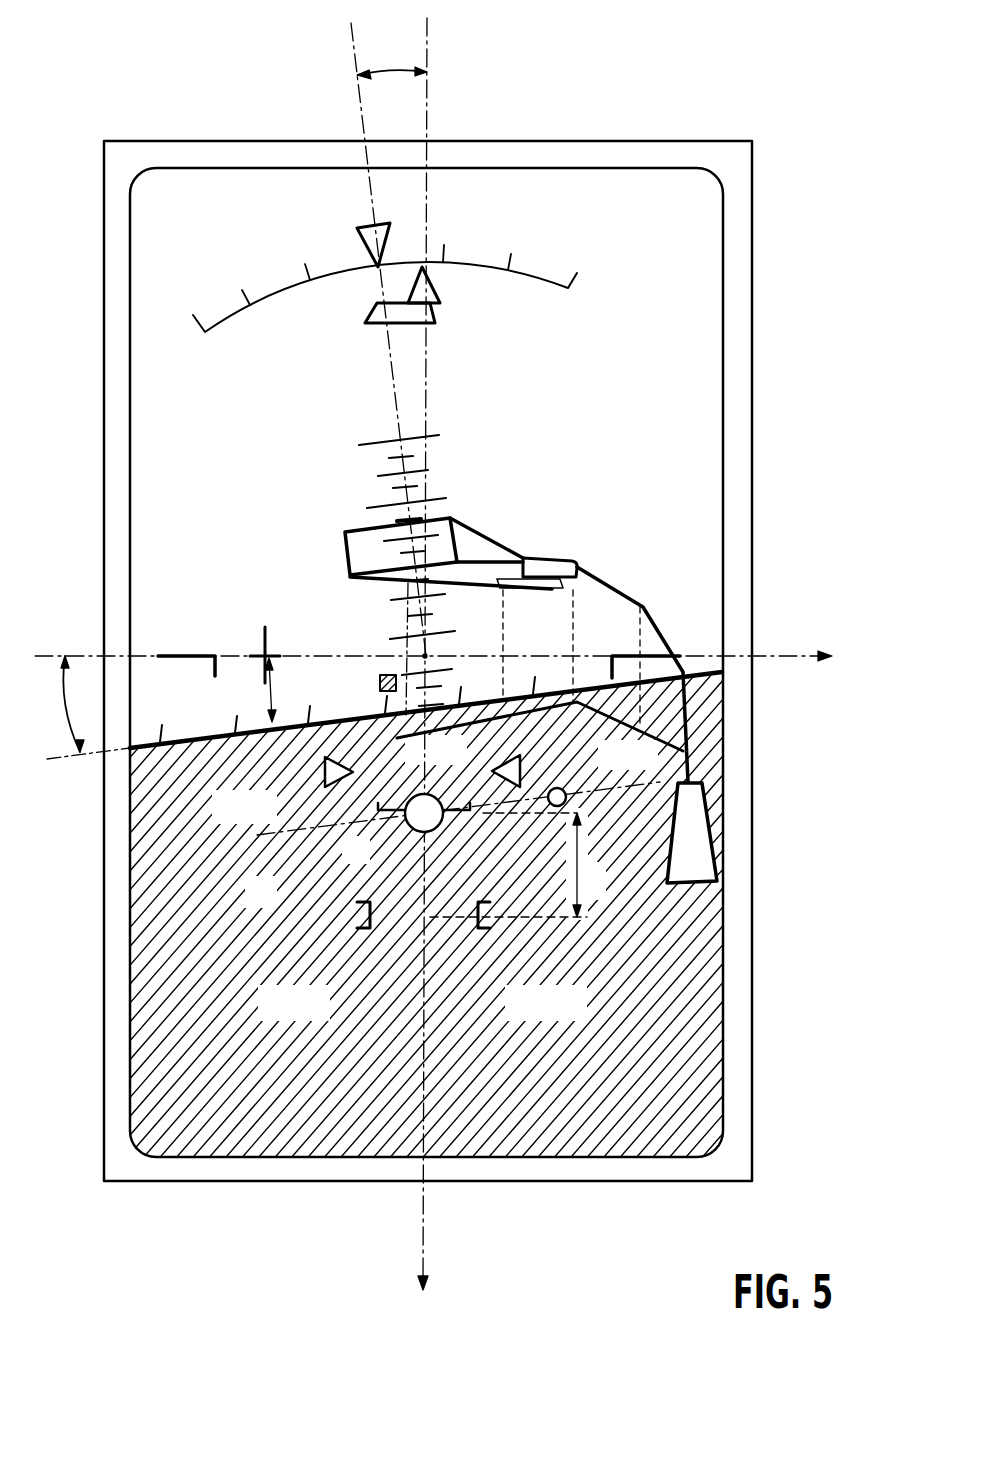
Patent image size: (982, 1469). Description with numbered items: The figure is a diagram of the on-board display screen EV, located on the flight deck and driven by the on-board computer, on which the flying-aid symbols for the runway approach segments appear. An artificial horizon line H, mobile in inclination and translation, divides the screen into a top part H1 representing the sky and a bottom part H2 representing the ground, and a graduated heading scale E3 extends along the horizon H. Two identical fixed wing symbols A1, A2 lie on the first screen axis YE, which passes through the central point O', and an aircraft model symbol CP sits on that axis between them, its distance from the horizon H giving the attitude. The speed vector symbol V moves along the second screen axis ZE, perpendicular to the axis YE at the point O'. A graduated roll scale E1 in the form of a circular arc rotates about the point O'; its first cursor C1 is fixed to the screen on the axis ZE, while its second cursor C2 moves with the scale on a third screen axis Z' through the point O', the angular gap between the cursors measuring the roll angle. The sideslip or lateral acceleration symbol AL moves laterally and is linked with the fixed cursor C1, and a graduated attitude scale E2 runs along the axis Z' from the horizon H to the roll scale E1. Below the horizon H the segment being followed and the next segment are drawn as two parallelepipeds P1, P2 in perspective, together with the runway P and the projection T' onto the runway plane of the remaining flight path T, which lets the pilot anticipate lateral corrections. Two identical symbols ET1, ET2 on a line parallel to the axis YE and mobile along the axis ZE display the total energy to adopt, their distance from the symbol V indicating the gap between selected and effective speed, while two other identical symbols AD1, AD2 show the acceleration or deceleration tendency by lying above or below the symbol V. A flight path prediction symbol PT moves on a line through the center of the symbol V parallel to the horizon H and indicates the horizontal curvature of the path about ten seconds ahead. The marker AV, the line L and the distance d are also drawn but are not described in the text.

The display means EV is at (703, 138).
The top part of the screen H1 is at (687, 348).
The bottom part of the screen H2 is at (695, 960).
The roll scale E1 is at (240, 297).
The second cursor C2 is at (357, 232).
The first cursor C1 is at (433, 285).
The sideslip symbol AL is at (436, 313).
The attitude scale E2 is at (445, 450).
The first parallelepiped P1 is at (488, 528).
The second parallelepiped P2 is at (556, 548).
The flight path T is at (622, 572).
The projection of the flight path T' is at (540, 682).
The first wing symbol A1 is at (183, 650).
The second wing symbol A2 is at (642, 655).
The aircraft model symbol CP is at (268, 640).
The central point of the screen O' is at (378, 629).
The marker AV is at (378, 682).
The heading scale E3 is at (190, 755).
The artificial horizon H is at (156, 742).
The first acceleration tendency symbol AD1 is at (322, 772).
The second acceleration tendency symbol AD2 is at (492, 767).
The flight path prediction symbol PT is at (566, 790).
The speed vector symbol V is at (407, 832).
The line L is at (290, 836).
The distance d is at (516, 865).
The runway P is at (708, 824).
The first total energy symbol ET1 is at (363, 935).
The second total energy symbol ET2 is at (488, 935).
The second screen axis ZE is at (425, 672).
The first screen axis YE is at (435, 643).
The third screen axis Z' is at (344, 339).